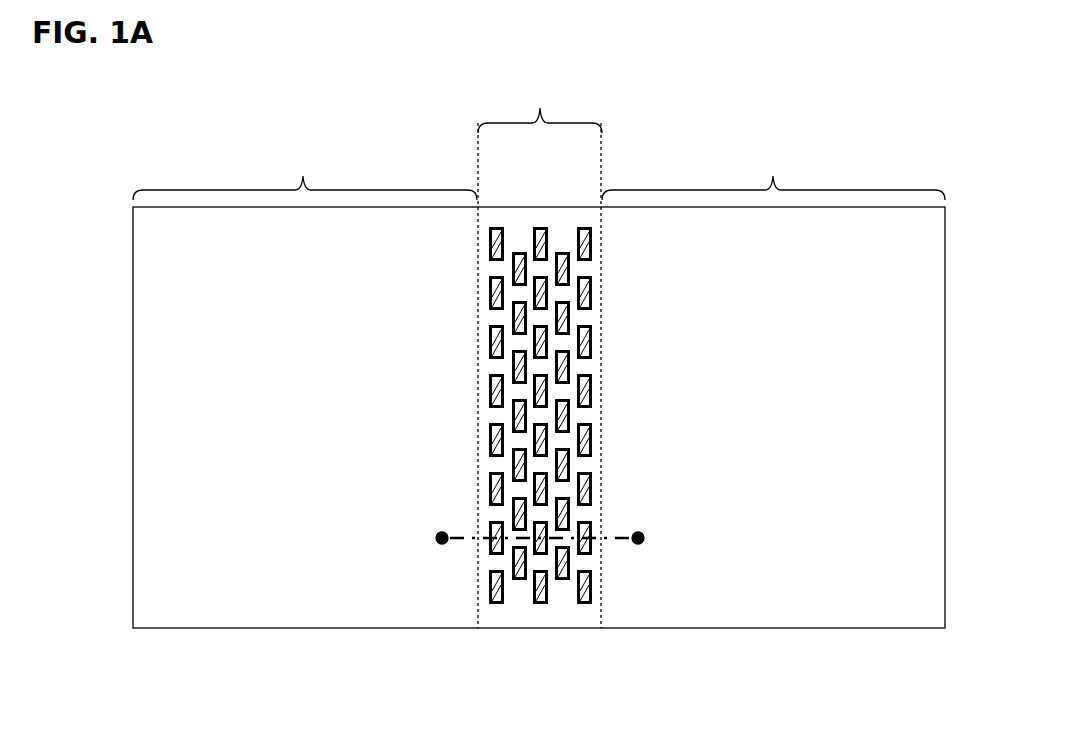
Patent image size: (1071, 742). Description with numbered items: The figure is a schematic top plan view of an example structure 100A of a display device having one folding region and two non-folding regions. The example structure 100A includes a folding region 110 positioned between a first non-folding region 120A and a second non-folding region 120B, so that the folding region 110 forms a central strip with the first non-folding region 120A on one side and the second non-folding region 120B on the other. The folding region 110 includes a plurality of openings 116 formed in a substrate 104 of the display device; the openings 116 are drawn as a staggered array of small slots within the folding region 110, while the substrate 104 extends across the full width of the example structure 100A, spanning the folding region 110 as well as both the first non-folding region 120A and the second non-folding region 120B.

The example structure 100A is at (863, 103).
The substrate 104 is at (153, 393).
The folding region 110 is at (540, 396).
The openings 116 is at (502, 590).
The first non-folding region 120A is at (305, 169).
The second non-folding region 120B is at (773, 169).